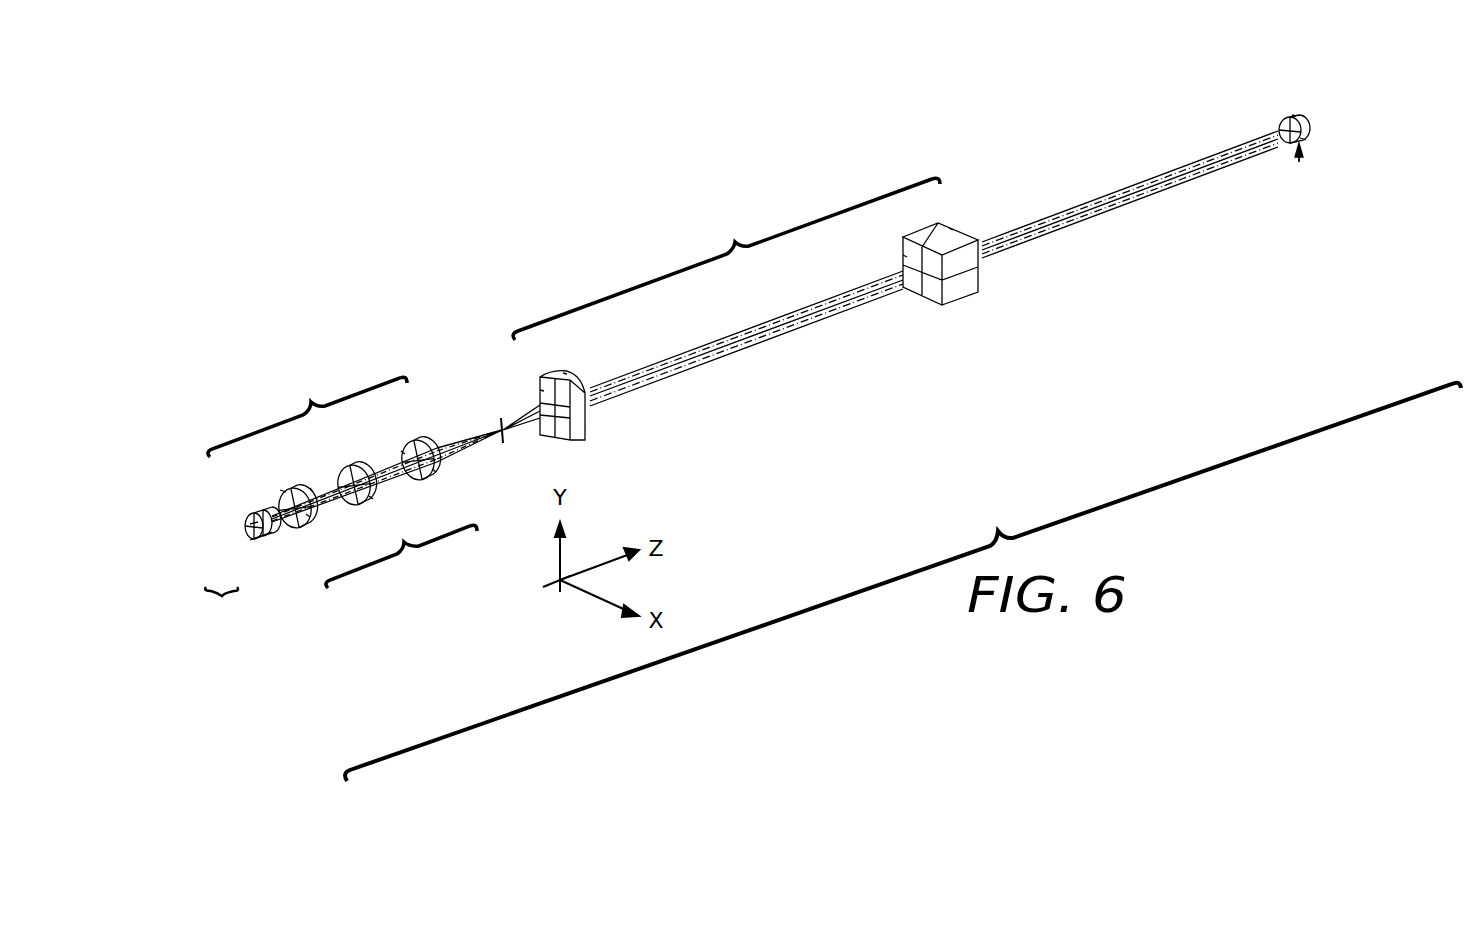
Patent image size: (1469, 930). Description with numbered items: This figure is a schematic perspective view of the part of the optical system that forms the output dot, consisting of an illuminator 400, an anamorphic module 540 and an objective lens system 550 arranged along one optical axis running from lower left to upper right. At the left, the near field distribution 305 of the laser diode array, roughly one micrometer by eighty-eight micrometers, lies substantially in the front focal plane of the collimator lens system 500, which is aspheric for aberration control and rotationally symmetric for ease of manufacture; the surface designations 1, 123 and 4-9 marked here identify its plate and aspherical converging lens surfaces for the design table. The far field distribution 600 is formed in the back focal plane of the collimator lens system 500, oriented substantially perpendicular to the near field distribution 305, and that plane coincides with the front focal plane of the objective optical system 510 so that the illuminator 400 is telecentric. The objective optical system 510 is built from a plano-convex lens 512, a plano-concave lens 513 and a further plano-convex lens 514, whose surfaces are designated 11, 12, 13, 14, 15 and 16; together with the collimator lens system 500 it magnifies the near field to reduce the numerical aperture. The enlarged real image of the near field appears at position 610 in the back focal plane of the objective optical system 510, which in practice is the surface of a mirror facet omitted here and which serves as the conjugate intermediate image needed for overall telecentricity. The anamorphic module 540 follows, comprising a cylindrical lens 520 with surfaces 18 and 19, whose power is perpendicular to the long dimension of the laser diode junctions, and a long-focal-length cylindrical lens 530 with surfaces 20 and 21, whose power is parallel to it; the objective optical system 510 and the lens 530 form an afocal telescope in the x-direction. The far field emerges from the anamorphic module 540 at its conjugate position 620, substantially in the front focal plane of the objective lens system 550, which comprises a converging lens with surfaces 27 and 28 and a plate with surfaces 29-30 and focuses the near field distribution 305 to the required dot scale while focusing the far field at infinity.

The laser diode light source 1 is at (225, 541).
The light source assembly (elements 1-3) 123 is at (250, 531).
The aspherical converging lens surfaces 4-9 is at (270, 539).
The near field distribution 305 is at (190, 548).
The collimator lens system 500 is at (250, 511).
The far field distribution 600 is at (286, 527).
The lens 11 is at (282, 499).
The lens 12 is at (295, 485).
The lens 13 is at (322, 491).
The lens 14 is at (357, 463).
The lens 15 is at (404, 450).
The lens 16 is at (421, 439).
The plano-convex lens 512 is at (309, 515).
The plano-concave lens 513 is at (372, 500).
The plano-convex lens 514 is at (435, 471).
The illuminator 400 is at (307, 413).
The objective optical system 510 is at (401, 561).
The position 610 is at (505, 443).
The beam splitter face 18 is at (541, 391).
The beam splitter face 19 is at (566, 374).
The cylindrical lens 520 is at (583, 440).
The anamorphic module 540 is at (726, 292).
The polarizing beam splitter face 20 is at (904, 256).
The polarizing beam splitter face 21 is at (950, 229).
The cylindrical lens 530 is at (963, 299).
The conjugate position 620 is at (1212, 184).
The converging lens surface 27 is at (1279, 121).
The converging lens surface 28 is at (1294, 114).
The plate surfaces 29-30 is at (1304, 139).
The objective lens system 550 is at (1299, 162).